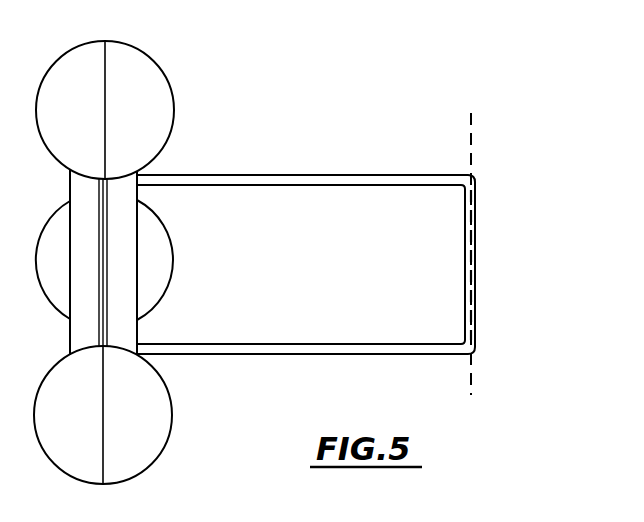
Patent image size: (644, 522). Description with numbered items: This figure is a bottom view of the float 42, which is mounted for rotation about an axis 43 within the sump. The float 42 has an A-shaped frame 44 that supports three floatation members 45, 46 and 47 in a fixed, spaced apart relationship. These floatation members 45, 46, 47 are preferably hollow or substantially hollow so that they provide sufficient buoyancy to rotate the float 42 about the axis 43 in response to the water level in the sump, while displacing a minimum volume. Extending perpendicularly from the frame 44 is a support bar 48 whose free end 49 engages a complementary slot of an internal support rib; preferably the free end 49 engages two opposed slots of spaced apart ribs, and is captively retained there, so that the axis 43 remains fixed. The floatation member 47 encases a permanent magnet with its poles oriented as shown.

The float 42 is at (507, 275).
The axis 43 is at (470, 150).
The A-shaped frame 44 is at (127, 248).
The floatation member 45 is at (152, 87).
The floatation member 46 is at (147, 403).
The floatation member 47 is at (155, 270).
The support bar 48 is at (253, 182).
The free end 49 is at (475, 220).